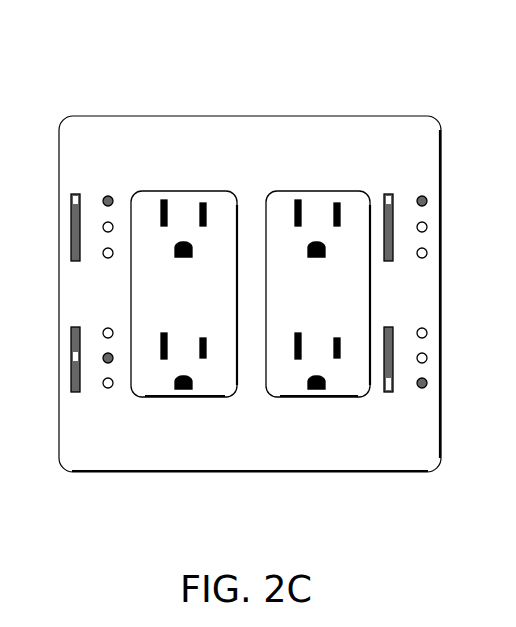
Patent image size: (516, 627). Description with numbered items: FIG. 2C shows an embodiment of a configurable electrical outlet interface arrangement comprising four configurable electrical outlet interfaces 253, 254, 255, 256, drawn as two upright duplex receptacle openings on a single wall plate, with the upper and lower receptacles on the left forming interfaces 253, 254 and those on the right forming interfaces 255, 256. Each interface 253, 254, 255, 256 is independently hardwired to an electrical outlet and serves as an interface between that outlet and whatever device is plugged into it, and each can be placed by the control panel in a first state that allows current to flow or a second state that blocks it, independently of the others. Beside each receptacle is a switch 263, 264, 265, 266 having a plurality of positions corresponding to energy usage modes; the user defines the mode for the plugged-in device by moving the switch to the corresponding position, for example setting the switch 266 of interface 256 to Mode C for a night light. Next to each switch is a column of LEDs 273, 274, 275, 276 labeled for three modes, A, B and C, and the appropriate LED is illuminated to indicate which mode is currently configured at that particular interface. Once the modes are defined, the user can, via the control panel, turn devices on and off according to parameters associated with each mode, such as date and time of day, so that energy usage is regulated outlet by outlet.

The configurable electrical outlet interface 253 is at (177, 155).
The configurable electrical outlet interface 254 is at (177, 432).
The configurable electrical outlet interface 255 is at (309, 155).
The configurable electrical outlet interface 256 is at (309, 432).
The switch 263 is at (74, 194).
The switch 264 is at (74, 392).
The switch 265 is at (389, 194).
The switch 266 is at (386, 392).
The LED 273 is at (106, 196).
The LED 274 is at (107, 388).
The LED 275 is at (423, 196).
The LED 276 is at (423, 388).